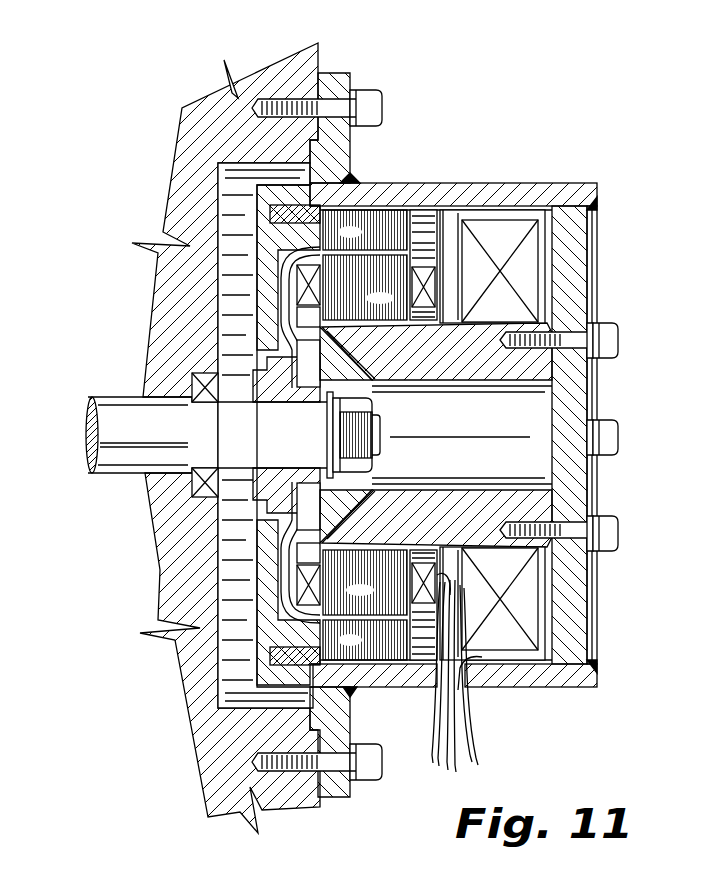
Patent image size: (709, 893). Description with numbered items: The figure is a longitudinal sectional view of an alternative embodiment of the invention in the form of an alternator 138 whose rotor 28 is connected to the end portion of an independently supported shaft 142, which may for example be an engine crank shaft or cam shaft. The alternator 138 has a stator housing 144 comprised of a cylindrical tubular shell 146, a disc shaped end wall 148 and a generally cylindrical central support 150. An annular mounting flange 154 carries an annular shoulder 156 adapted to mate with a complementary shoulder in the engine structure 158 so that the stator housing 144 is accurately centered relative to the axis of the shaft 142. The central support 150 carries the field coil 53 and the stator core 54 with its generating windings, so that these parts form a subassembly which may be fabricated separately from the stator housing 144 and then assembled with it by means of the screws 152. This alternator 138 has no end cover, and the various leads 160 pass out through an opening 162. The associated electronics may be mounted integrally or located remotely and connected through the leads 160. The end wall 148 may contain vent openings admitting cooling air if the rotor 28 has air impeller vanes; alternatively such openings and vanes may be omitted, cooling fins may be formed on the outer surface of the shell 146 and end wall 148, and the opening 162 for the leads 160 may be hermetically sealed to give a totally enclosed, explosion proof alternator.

The rotor 28 is at (262, 261).
The field coil 53 is at (509, 313).
The stator core 54 is at (367, 298).
The alternator 138 is at (431, 162).
The shaft 142 is at (132, 477).
The stator housing 144 is at (538, 192).
The cylindrical tubular shell 146 is at (438, 190).
The end wall 148 is at (585, 258).
The central support 150 is at (433, 367).
The screws 152 is at (620, 333).
The mounting flange 154 is at (343, 77).
The annular shoulder 156 is at (340, 152).
The engine structure 158 is at (180, 168).
The leads 160 is at (470, 724).
The opening 162 is at (440, 690).